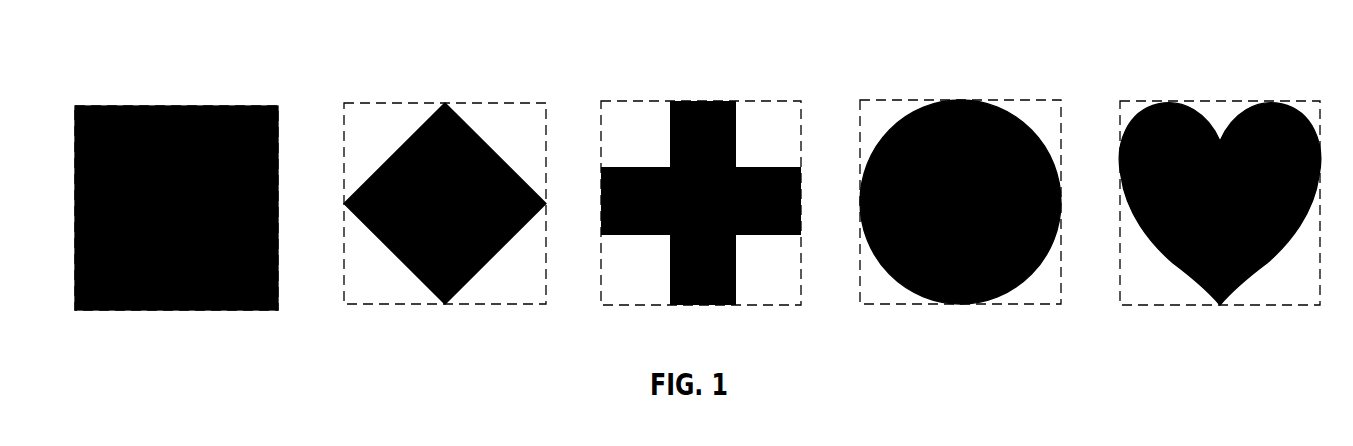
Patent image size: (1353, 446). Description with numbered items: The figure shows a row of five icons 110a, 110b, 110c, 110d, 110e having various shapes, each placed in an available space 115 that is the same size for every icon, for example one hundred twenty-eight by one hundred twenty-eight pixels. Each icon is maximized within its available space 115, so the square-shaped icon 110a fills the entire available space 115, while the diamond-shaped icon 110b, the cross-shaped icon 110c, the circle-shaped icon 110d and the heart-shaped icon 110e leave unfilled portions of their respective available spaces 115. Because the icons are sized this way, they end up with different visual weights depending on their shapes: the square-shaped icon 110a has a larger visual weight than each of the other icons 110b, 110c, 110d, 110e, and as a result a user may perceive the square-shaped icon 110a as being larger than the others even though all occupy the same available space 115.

The available space 115 is at (92, 97).
The square-shaped icon 110a is at (208, 97).
The icon 110b is at (457, 113).
The icon 110c is at (702, 93).
The icon 110d is at (995, 103).
The icon 110e is at (1272, 96).